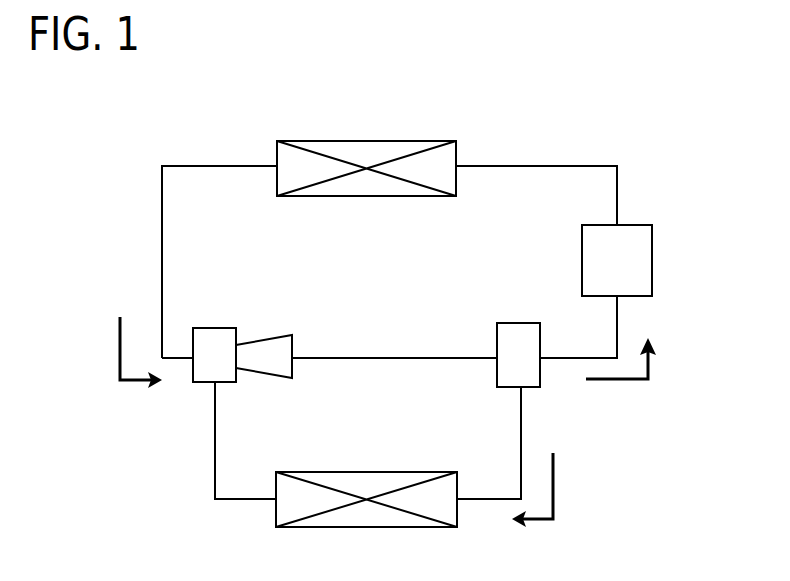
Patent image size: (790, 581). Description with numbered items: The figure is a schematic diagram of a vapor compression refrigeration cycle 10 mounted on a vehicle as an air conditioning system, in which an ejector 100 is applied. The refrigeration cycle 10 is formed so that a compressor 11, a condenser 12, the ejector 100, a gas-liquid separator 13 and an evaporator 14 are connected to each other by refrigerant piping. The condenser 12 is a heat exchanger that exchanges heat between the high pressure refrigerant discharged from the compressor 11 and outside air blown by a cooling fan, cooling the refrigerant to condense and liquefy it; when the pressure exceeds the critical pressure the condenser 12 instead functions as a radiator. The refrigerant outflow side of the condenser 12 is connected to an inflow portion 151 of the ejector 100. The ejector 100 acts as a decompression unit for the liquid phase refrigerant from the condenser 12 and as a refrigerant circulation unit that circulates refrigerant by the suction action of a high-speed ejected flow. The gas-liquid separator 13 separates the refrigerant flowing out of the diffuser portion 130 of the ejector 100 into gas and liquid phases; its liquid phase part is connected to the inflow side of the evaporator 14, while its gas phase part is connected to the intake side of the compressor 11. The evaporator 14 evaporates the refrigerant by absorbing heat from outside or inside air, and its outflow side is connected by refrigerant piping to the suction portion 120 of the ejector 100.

The refrigeration cycle 10 is at (197, 150).
The compressor 11 is at (630, 225).
The condenser 12 is at (415, 141).
The gas-liquid separator 13 is at (510, 323).
The evaporator 14 is at (433, 472).
The ejector 100 is at (327, 356).
The suction portion 120 is at (217, 383).
The diffuser portion 130 is at (280, 378).
The inflow portion 151 is at (191, 360).